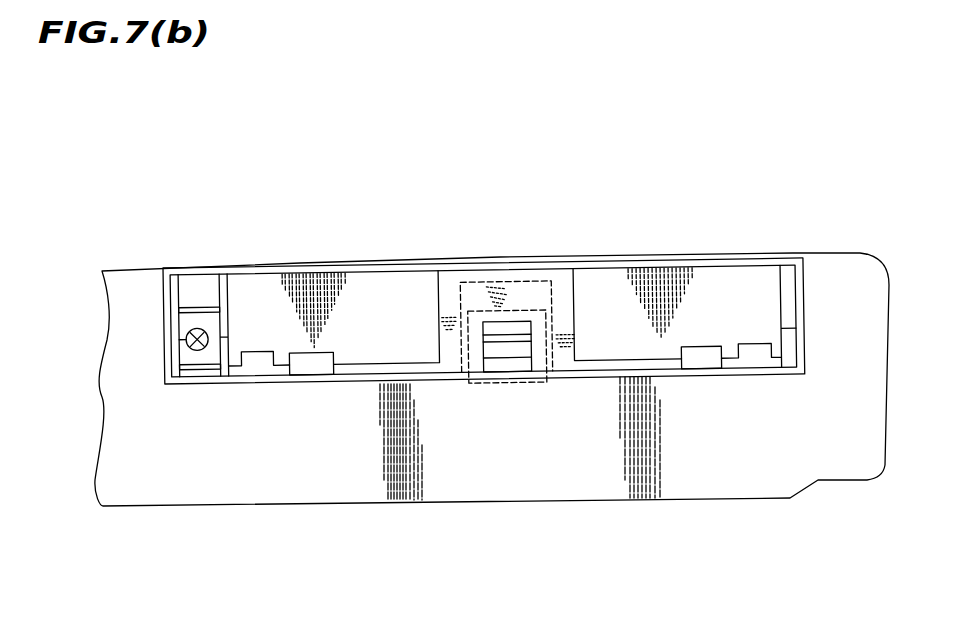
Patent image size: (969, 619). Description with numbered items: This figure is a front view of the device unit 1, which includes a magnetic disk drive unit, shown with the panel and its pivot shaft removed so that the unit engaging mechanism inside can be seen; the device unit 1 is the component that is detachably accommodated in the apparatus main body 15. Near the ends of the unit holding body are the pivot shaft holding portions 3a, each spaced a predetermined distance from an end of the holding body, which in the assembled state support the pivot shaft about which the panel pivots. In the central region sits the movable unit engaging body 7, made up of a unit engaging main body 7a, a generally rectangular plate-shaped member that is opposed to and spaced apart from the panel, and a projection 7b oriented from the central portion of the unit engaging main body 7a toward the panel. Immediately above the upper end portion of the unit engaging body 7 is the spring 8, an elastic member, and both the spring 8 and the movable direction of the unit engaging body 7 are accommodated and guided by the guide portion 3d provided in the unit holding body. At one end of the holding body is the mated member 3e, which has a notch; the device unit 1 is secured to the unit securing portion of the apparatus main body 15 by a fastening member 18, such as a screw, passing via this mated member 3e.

The device unit 1 is at (737, 292).
The pivot shaft holding portions 3a is at (312, 368).
The guide portion 3d is at (562, 304).
The mated member 3e is at (198, 358).
The unit engaging body 7 is at (615, 146).
The unit engaging main body 7a is at (515, 328).
The projection 7b is at (523, 338).
The spring 8 is at (497, 296).
The apparatus main body 15 is at (548, 468).
The fastening member 18 is at (198, 330).